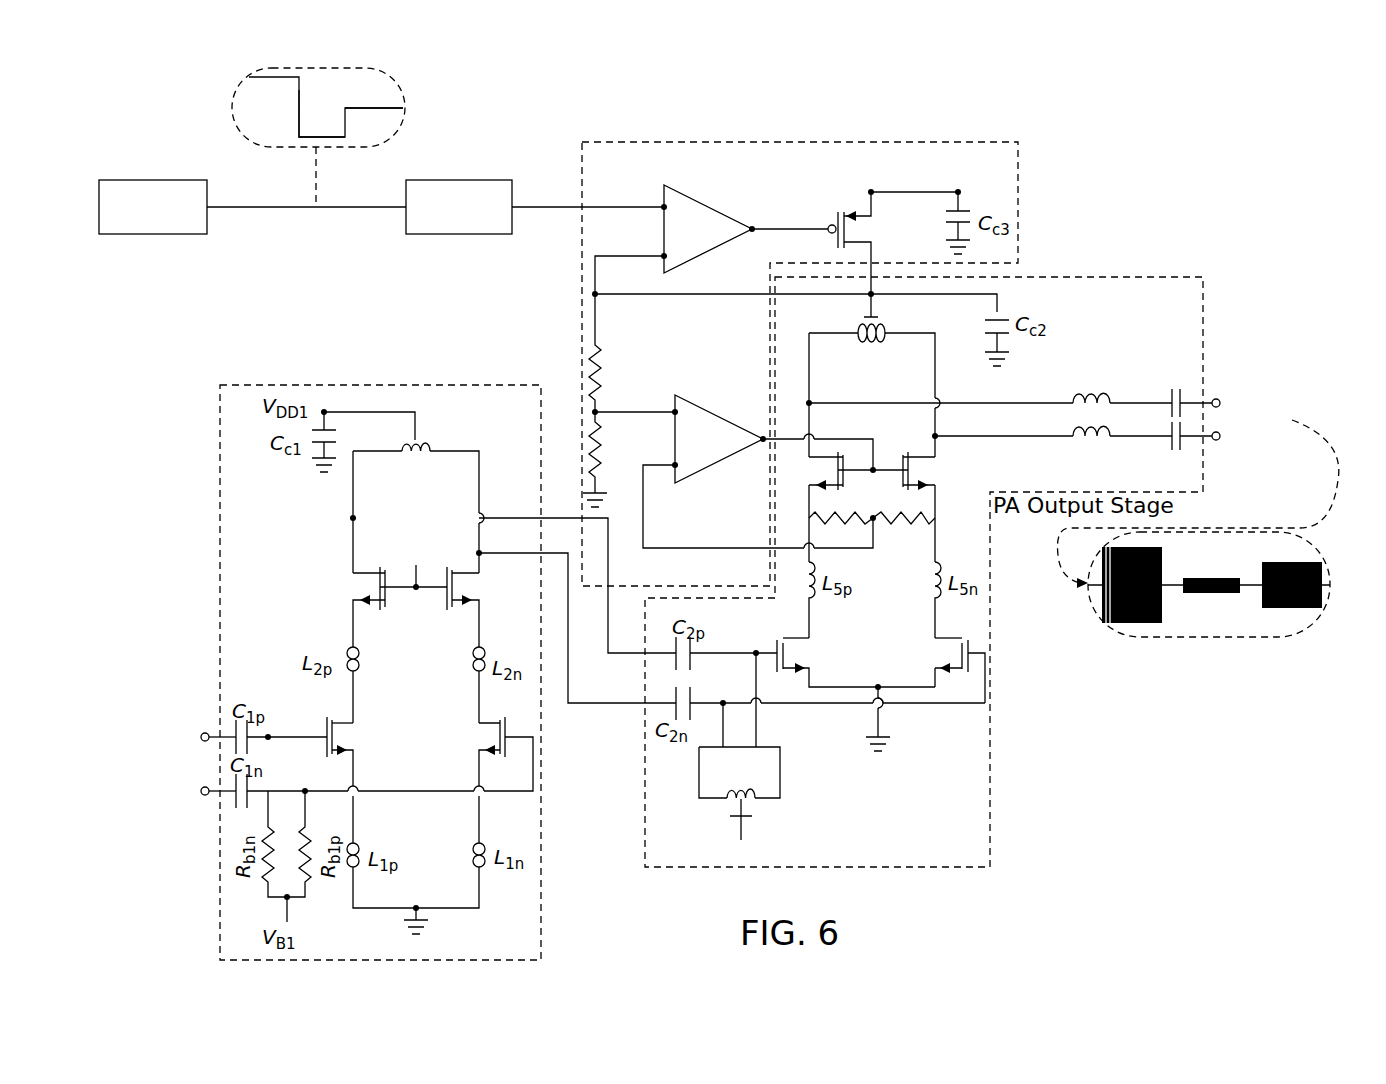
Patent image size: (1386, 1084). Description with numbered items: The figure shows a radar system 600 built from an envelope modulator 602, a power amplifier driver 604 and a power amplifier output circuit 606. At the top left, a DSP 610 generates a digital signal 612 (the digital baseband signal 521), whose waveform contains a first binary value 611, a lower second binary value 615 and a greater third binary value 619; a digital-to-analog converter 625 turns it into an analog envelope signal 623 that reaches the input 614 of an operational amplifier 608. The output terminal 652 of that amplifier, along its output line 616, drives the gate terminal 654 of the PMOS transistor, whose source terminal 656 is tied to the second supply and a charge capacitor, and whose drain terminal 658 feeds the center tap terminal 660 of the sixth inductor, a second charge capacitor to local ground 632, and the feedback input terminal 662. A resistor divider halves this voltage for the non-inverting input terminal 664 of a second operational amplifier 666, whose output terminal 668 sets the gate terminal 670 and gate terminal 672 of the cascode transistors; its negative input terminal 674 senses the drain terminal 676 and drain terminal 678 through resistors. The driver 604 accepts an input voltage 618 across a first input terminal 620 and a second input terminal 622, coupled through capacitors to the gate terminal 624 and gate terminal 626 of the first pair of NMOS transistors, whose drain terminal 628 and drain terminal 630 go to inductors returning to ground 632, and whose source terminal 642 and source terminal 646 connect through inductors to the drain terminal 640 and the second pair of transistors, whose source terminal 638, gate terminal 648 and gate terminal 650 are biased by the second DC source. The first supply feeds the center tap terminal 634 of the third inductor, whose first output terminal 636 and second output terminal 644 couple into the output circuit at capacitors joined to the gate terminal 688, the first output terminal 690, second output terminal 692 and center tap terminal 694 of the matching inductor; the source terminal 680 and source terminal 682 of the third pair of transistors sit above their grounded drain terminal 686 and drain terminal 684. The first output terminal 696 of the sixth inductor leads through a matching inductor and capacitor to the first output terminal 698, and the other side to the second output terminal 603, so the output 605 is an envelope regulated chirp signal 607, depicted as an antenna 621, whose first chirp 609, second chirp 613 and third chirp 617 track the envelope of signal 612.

The radar system 600 is at (1030, 97).
The digital baseband signal 521 is at (270, 207).
The envelope modulator 602 is at (1018, 160).
The second output terminal 603 is at (1222, 438).
The power amplifier driver 604 is at (220, 548).
The output 605 is at (1257, 407).
The power amplifier output circuit 606 is at (1137, 277).
The envelope regulated chirp signal 607 is at (1268, 532).
The operational amplifier 608 is at (700, 202).
The first chirp 609 is at (1290, 609).
The DSP 610 is at (150, 234).
The first binary value 611 is at (383, 110).
The digital signal 612 is at (257, 76).
The second chirp 613 is at (1210, 594).
The input of operational amplifier 614 is at (620, 207).
The second binary value 615 is at (320, 131).
The amplifier output line 616 is at (775, 229).
The third chirp 617 is at (1135, 624).
The input voltage 618 is at (168, 762).
The third binary value 619 is at (257, 80).
The first input terminal 620 is at (205, 733).
The antenna 621 is at (1340, 603).
The second input terminal 622 is at (205, 796).
The analog envelope signal 623 is at (537, 207).
The gate terminal of NMOS transistor MN1p 624 is at (303, 737).
The digital-to-analog converter 625 is at (455, 234).
The gate terminal of NMOS transistor MN1n 626 is at (540, 736).
The drain terminal of NMOS transistor MN1p 628 is at (340, 753).
The drain terminal of NMOS transistor MN1n 630 is at (497, 753).
The local ground 632 is at (972, 240).
The center tap terminal of inductor L3 634 is at (425, 438).
The first output terminal of inductor L3 636 is at (392, 455).
The source terminal of NMOS transistor MN2p 638 is at (368, 573).
The drain terminal of NMOS transistor MN2p 640 is at (368, 603).
The source terminal of NMOS transistor MN1p 642 is at (348, 722).
The second output terminal of inductor L3 644 is at (440, 455).
The source terminal of NMOS transistor MN1n 646 is at (478, 553).
The gate terminal of NMOS transistor MN2p 648 is at (385, 605).
The gate terminal of NMOS transistor MN2n 650 is at (443, 605).
The output terminal of operational amplifier 652 is at (758, 234).
The gate terminal of PMOS transistor MP1 654 is at (828, 225).
The source terminal of PMOS transistor MP1 656 is at (868, 216).
The drain terminal of PMOS transistor MP1 658 is at (855, 245).
The center tap terminal of inductor L6 660 is at (878, 322).
The input terminal of operational amplifier 662 is at (620, 256).
The non-inverting input terminal of second operational amplifier 664 is at (663, 405).
The second operational amplifier 666 is at (695, 473).
The output terminal of second operational amplifier 668 is at (766, 445).
The gate terminal of NMOS transistor MN4p 670 is at (848, 476).
The gate terminal of NMOS transistor MN4n 672 is at (890, 470).
The negative input terminal of second operational amplifier 674 is at (657, 467).
The drain terminal of NMOS transistor MN4p 676 is at (825, 483).
The drain terminal of NMOS transistor MN4n 678 is at (940, 497).
The source terminal of NMOS transistor MN3p 680 is at (800, 636).
The source terminal of NMOS transistor MN3n 682 is at (945, 636).
The drain terminal of NMOS transistor MN3n 684 is at (950, 674).
The drain terminal of NMOS transistor MN3p 686 is at (790, 673).
The gate terminal of NMOS transistor MN3p 688 is at (768, 650).
The first output terminal of inductor LM4 690 is at (765, 802).
The second output terminal of inductor LM4 692 is at (717, 802).
The center tap terminal of inductor LM4 694 is at (748, 818).
The first output terminal of inductor L6 696 is at (845, 340).
The first output terminal 698 is at (1218, 398).